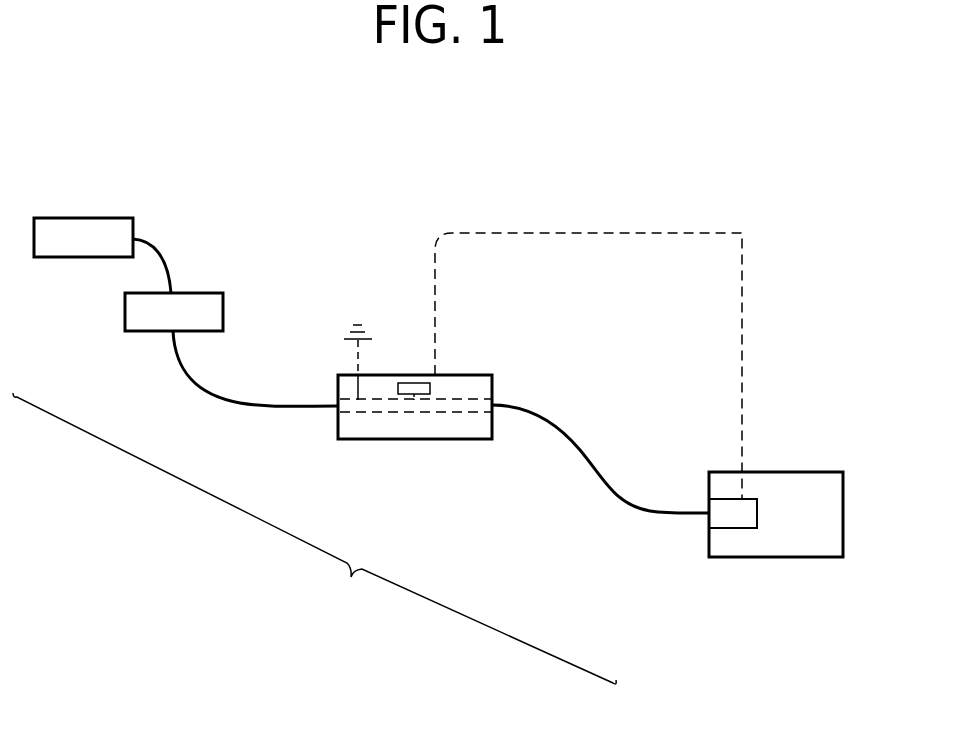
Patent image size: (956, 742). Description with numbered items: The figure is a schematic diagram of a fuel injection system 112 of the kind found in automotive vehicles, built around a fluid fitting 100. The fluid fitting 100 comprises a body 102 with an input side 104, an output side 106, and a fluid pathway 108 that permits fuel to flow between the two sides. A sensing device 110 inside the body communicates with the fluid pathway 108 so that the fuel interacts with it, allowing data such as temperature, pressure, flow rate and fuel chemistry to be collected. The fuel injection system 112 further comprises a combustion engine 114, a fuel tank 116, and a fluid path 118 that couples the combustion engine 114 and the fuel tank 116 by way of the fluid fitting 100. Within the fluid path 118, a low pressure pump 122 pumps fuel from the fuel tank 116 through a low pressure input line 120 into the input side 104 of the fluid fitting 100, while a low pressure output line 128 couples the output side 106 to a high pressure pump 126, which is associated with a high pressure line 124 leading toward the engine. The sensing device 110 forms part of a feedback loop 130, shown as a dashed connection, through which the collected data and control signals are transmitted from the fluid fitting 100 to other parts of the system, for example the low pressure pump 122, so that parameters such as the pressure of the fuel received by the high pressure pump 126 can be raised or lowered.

The fluid fitting 100 is at (422, 367).
The body 102 is at (478, 375).
The input side 104 is at (506, 394).
The output side 106 is at (323, 388).
The fluid pathway 108 is at (372, 405).
The sensing device 110 is at (413, 383).
The fuel injection system 112 is at (753, 200).
The combustion engine 114 is at (107, 218).
The fuel tank 116 is at (818, 472).
The fluid path 118 is at (314, 538).
The low pressure input line 120 is at (623, 500).
The low pressure pump 122 is at (733, 499).
The high pressure line 124 is at (167, 257).
The high pressure pump 126 is at (217, 293).
The low pressure output line 128 is at (197, 380).
The feedback loop 130 is at (595, 233).